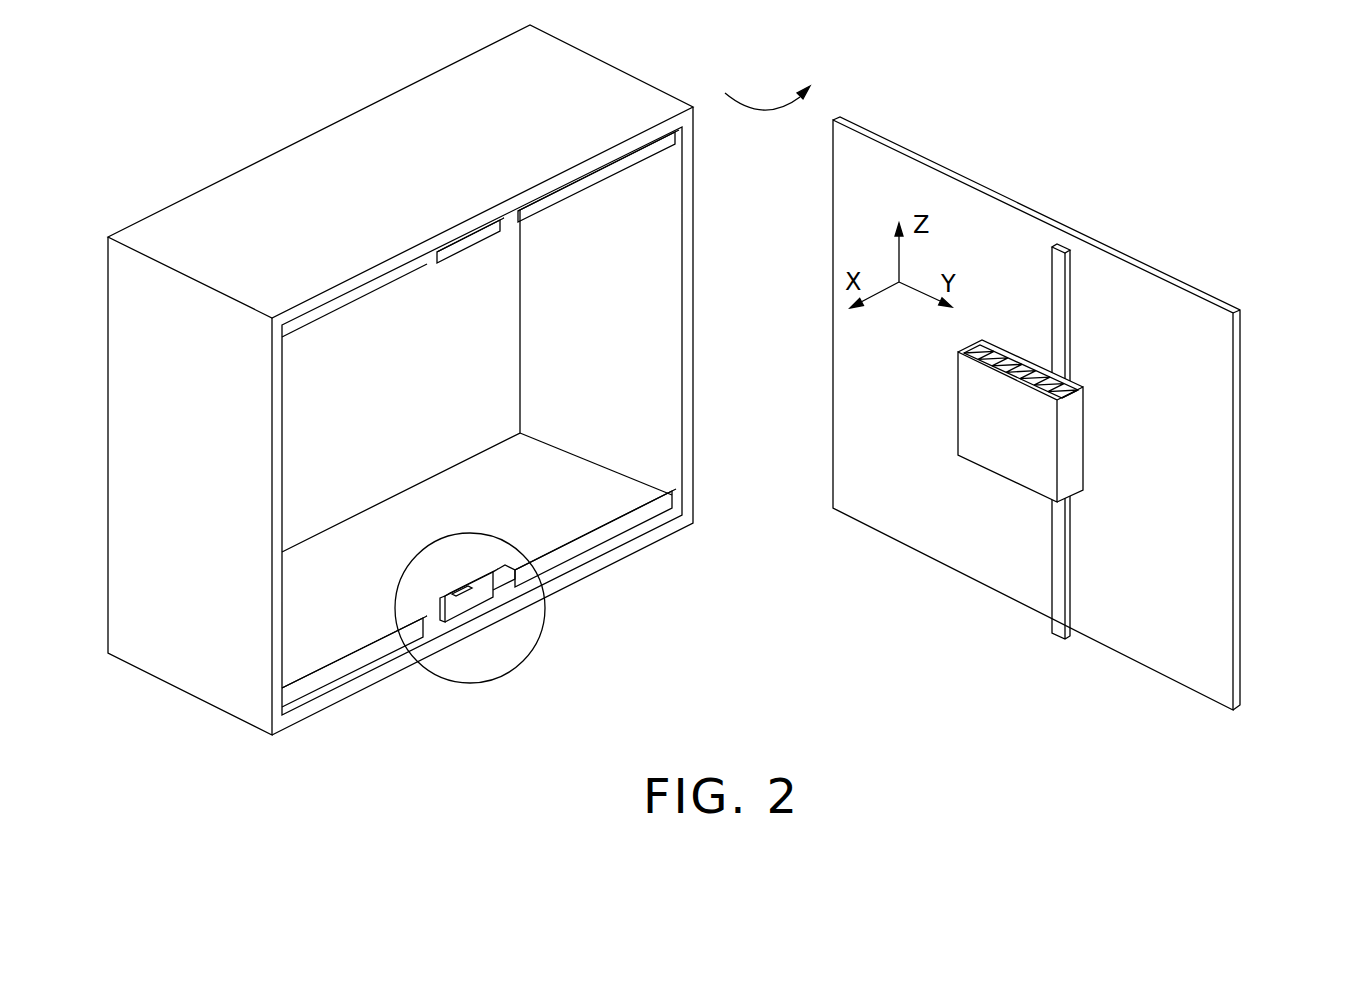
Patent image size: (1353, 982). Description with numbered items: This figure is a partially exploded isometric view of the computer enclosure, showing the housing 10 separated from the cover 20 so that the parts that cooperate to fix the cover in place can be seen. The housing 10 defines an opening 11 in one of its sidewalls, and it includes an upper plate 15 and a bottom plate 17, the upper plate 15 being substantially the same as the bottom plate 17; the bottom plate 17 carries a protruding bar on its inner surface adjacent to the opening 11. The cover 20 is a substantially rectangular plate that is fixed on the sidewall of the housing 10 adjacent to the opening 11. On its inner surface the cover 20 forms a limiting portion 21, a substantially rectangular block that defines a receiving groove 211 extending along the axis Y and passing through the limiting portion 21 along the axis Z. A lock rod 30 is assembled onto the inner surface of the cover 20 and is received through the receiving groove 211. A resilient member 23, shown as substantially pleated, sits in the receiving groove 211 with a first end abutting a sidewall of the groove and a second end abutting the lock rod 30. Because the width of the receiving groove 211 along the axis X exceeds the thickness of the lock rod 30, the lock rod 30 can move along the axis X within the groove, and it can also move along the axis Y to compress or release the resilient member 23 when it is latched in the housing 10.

The housing 10 is at (212, 155).
The opening 11 is at (612, 341).
The upper plate 15 is at (418, 132).
The bottom plate 17 is at (305, 635).
The cover 20 is at (1150, 332).
The limiting portion 21 is at (1013, 463).
The receiving groove 211 is at (1053, 387).
The resilient member 23 is at (993, 358).
The lock rod 30 is at (1060, 303).